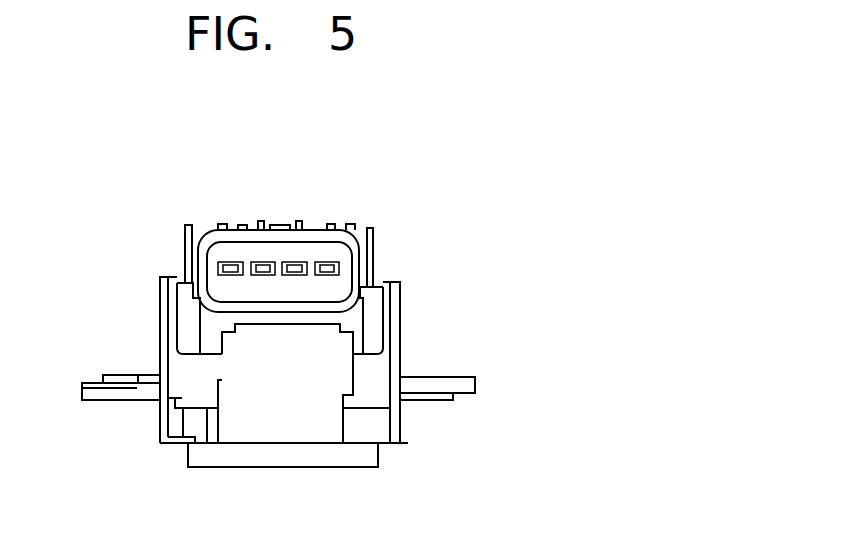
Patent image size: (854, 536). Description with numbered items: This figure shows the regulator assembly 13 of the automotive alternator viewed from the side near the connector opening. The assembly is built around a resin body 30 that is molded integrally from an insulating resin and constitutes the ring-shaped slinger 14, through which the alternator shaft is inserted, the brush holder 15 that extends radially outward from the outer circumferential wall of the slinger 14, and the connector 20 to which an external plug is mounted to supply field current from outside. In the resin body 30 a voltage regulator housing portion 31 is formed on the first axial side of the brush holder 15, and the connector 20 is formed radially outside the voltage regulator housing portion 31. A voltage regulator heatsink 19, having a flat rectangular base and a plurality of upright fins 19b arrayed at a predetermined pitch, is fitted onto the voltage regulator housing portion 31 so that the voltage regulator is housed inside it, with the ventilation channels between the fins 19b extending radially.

The regulator assembly 13 is at (112, 184).
The slinger 14 is at (368, 453).
The brush holder 15 is at (330, 370).
The voltage regulator heatsink 19 is at (180, 244).
The fins 19b is at (374, 252).
The connector 20 is at (338, 237).
The resin body 30 is at (158, 314).
The voltage regulator housing portion 31 is at (388, 313).